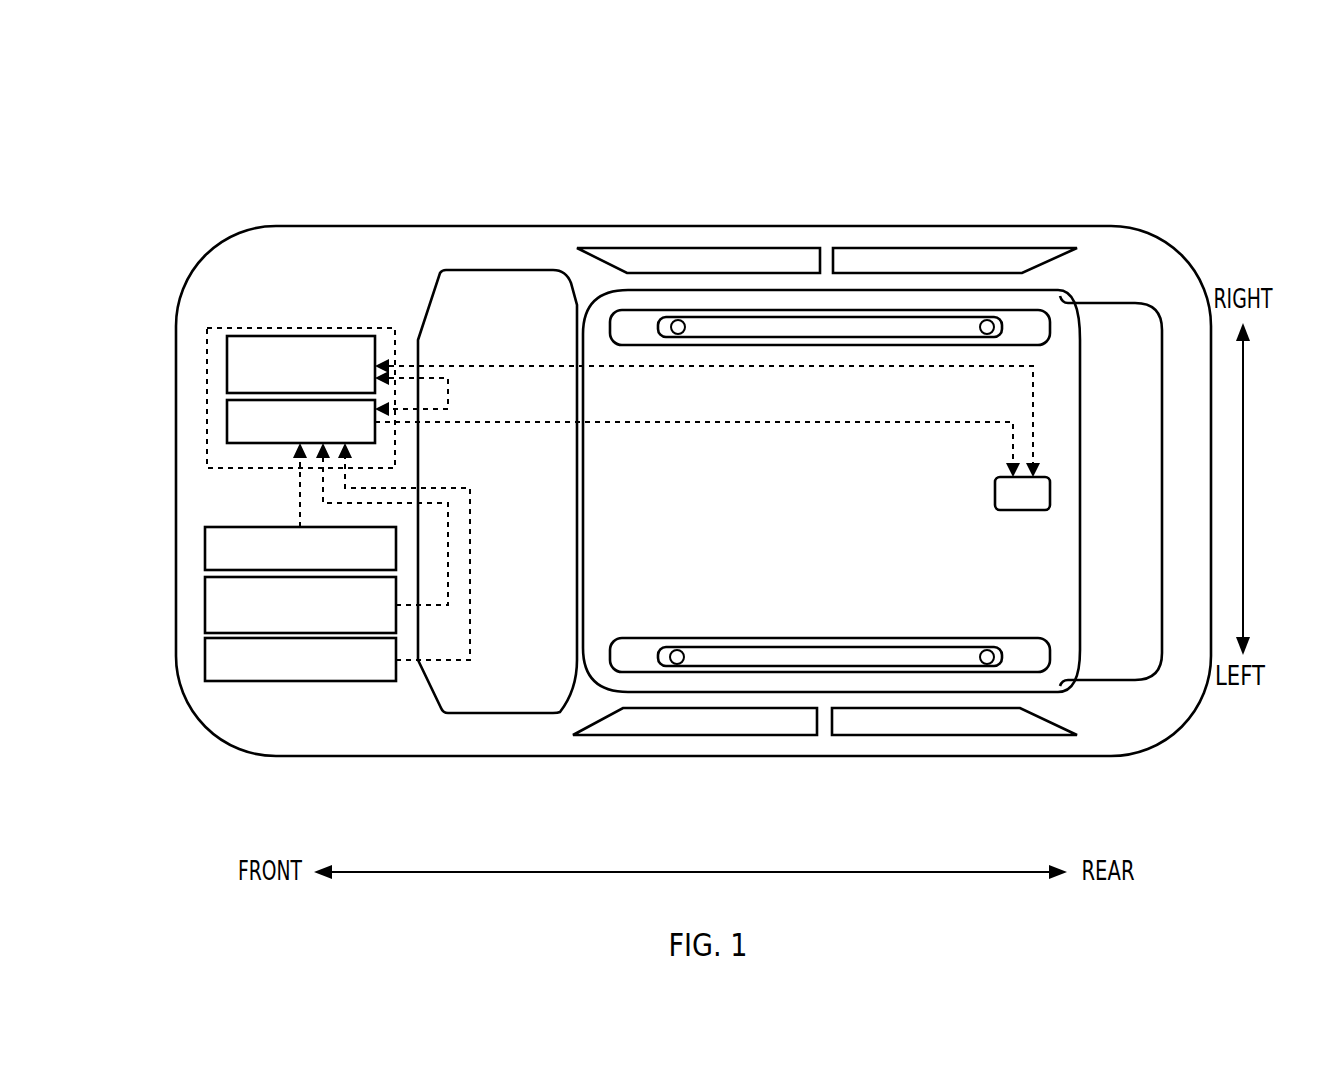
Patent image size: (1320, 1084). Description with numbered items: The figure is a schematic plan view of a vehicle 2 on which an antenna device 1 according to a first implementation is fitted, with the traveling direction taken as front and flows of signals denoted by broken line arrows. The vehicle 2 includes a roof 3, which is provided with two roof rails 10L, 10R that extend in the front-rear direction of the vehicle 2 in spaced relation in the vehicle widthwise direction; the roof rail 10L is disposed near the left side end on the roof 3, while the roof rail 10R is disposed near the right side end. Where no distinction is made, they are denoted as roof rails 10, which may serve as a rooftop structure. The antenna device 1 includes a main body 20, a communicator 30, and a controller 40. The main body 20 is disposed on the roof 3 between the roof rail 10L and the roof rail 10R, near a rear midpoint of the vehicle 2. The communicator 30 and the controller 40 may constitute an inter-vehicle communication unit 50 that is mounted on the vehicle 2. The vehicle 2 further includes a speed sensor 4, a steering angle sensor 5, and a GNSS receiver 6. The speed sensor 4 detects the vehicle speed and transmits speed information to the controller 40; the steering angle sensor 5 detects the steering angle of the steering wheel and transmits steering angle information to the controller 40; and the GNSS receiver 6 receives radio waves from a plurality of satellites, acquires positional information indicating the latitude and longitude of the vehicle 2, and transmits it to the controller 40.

The antenna device 1 is at (1032, 122).
The vehicle 2 is at (365, 226).
The roof 3 is at (593, 297).
The roof rails 10 is at (812, 492).
The roof rail 10R is at (630, 308).
The roof rail 10L is at (626, 673).
The main body 20 is at (1050, 492).
The communicator 30 is at (227, 359).
The controller 40 is at (227, 415).
The inter-vehicle communication unit 50 is at (207, 457).
The speed sensor 4 is at (205, 545).
The steering angle sensor 5 is at (205, 609).
The GNSS receiver 6 is at (205, 664).